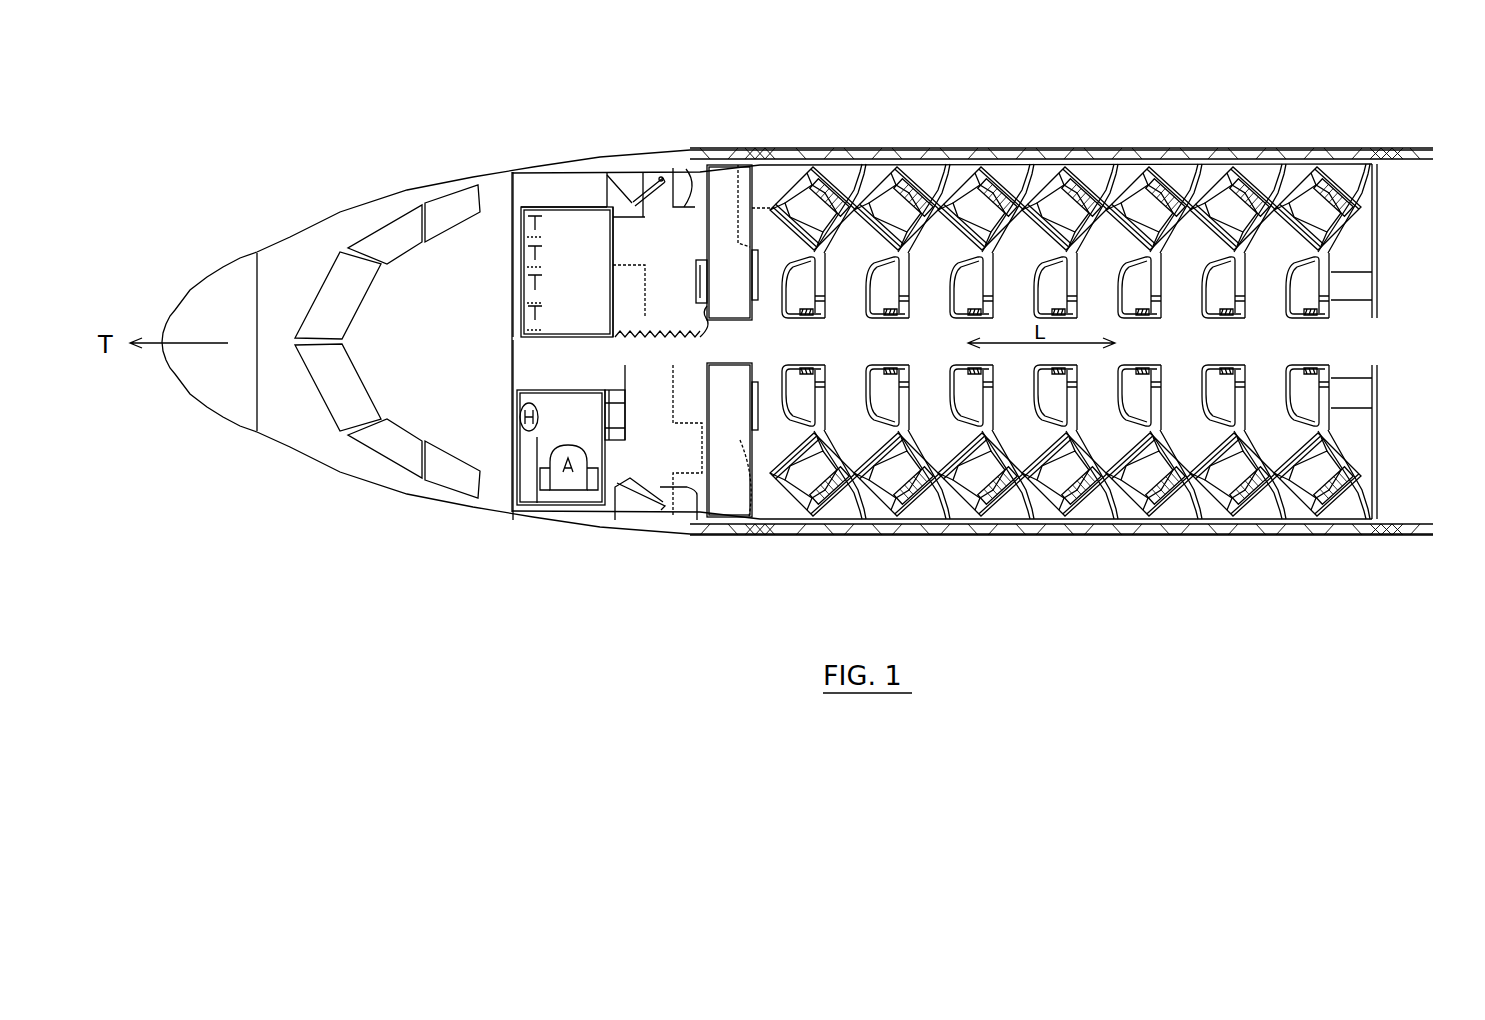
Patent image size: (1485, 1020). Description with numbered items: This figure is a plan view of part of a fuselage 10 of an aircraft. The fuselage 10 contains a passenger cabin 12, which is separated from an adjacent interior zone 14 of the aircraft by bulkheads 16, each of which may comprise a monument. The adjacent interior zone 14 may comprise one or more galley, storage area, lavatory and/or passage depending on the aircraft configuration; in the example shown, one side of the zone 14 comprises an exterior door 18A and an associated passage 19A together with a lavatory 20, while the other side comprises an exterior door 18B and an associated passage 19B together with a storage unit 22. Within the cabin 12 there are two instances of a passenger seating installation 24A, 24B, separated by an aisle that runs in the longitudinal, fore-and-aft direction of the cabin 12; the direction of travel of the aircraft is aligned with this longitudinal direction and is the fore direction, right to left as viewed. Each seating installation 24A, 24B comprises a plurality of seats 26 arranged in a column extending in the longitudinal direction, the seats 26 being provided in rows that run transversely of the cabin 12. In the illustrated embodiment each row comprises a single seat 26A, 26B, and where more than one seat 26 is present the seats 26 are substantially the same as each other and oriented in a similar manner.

The fuselage 10 is at (1348, 138).
The passenger cabin 12 is at (1398, 244).
The adjacent interior zone 14 is at (672, 217).
The bulkhead 16 is at (727, 173).
The exterior door 18A is at (640, 522).
The exterior door 18B is at (657, 160).
The passage 19A is at (643, 453).
The passage 19B is at (637, 240).
The lavatory 20 is at (543, 447).
The storage unit 22 is at (555, 232).
The passenger seating installation 24A is at (845, 507).
The passenger seating installation 24B is at (840, 163).
The seat 26 is at (903, 182).
The seat 26A is at (803, 497).
The seat 26B is at (793, 195).